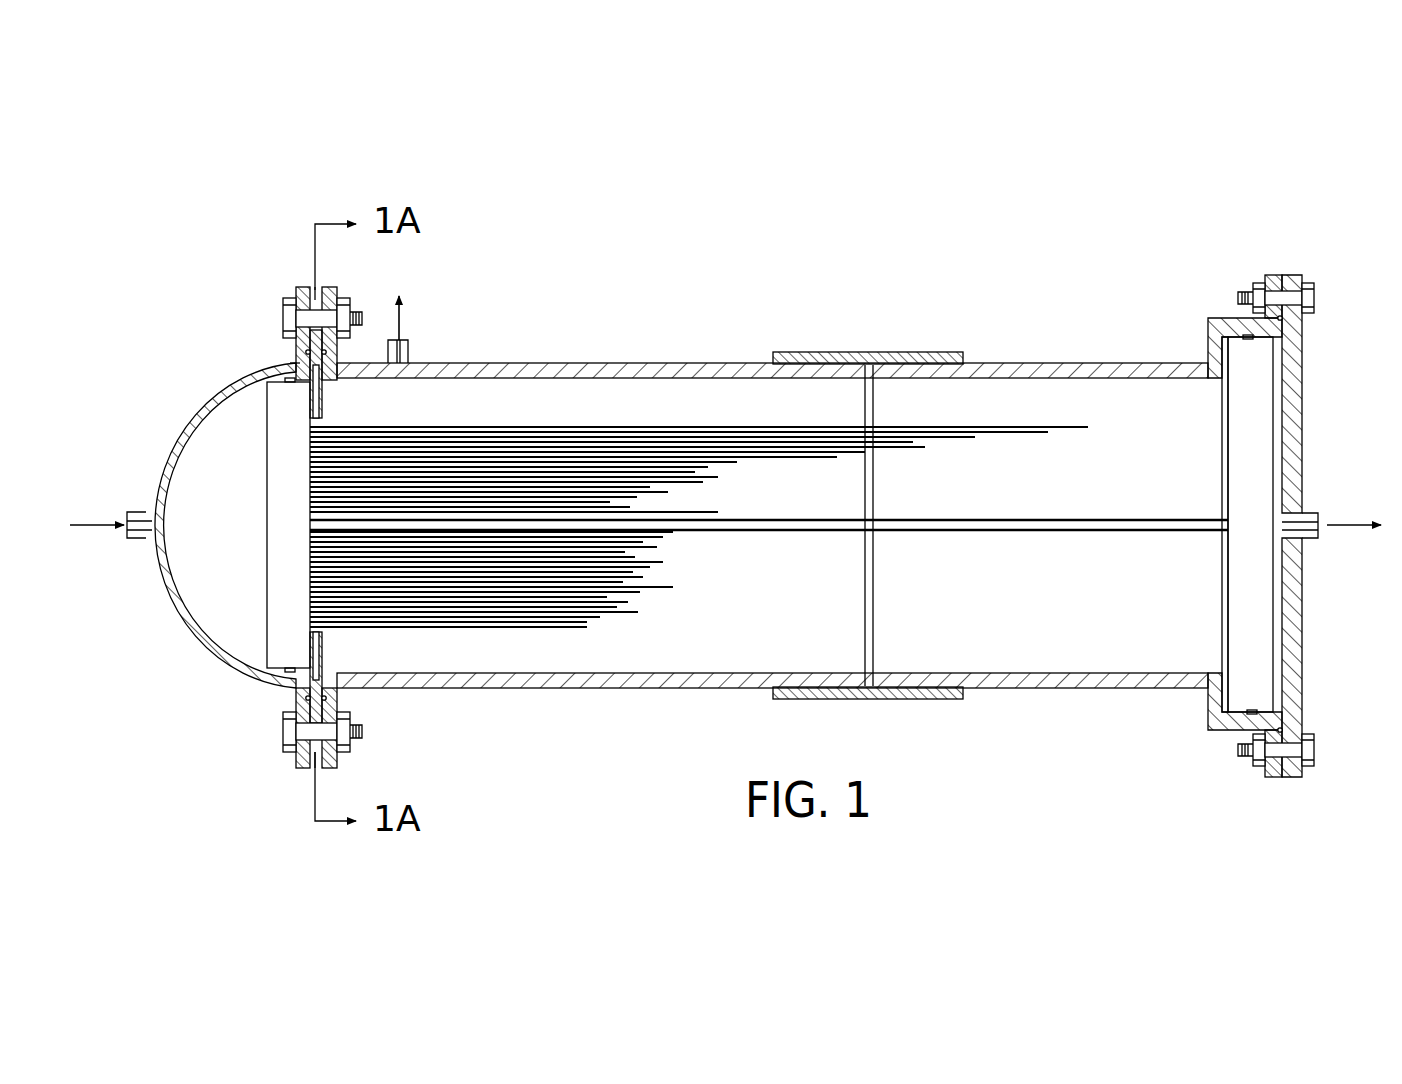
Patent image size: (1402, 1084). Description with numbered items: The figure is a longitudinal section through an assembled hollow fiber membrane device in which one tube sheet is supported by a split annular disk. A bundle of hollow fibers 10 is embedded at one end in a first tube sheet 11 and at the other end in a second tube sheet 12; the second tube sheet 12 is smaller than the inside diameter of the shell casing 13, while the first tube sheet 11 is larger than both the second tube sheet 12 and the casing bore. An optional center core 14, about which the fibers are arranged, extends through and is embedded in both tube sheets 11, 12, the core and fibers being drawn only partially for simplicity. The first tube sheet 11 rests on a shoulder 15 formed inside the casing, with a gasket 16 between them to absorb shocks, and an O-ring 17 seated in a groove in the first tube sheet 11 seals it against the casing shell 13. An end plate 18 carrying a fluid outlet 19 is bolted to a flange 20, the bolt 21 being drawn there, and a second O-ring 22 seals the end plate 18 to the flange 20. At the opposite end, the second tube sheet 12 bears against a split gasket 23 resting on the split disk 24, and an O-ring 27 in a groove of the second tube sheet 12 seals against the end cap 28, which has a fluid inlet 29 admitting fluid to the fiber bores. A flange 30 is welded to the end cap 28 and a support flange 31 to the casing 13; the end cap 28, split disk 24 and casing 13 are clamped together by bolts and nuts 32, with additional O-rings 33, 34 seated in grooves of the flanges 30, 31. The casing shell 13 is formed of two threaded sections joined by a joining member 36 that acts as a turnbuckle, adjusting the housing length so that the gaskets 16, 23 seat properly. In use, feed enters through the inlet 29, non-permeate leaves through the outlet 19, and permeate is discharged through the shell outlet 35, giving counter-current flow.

The bundle of hollow fibers 10 is at (742, 427).
The first tube sheet 11 is at (1238, 488).
The second tube sheet 12 is at (278, 512).
The shell casing 13 is at (622, 363).
The center core 14 is at (822, 522).
The shoulder 15 is at (1207, 340).
The gasket 16 is at (1233, 365).
The O-ring 17 is at (1253, 710).
The end plate 18 is at (1303, 432).
The fluid outlet 19 is at (1318, 533).
The flange 20 is at (1270, 278).
The bolt 21 is at (1315, 300).
The second O-ring 22 is at (1287, 730).
The split gasket 23 is at (308, 652).
The split disk 24 is at (325, 663).
The O-ring 27 is at (295, 362).
The end cap 28 is at (168, 438).
The fluid inlet 29 is at (127, 515).
The flange 30 is at (294, 296).
The support flange 31 is at (338, 300).
The bolts and nuts 32 is at (287, 740).
The O-ring 33 is at (300, 700).
The O-ring 34 is at (338, 698).
The fluid outlet means 35 is at (407, 340).
The joining member 36 is at (848, 352).